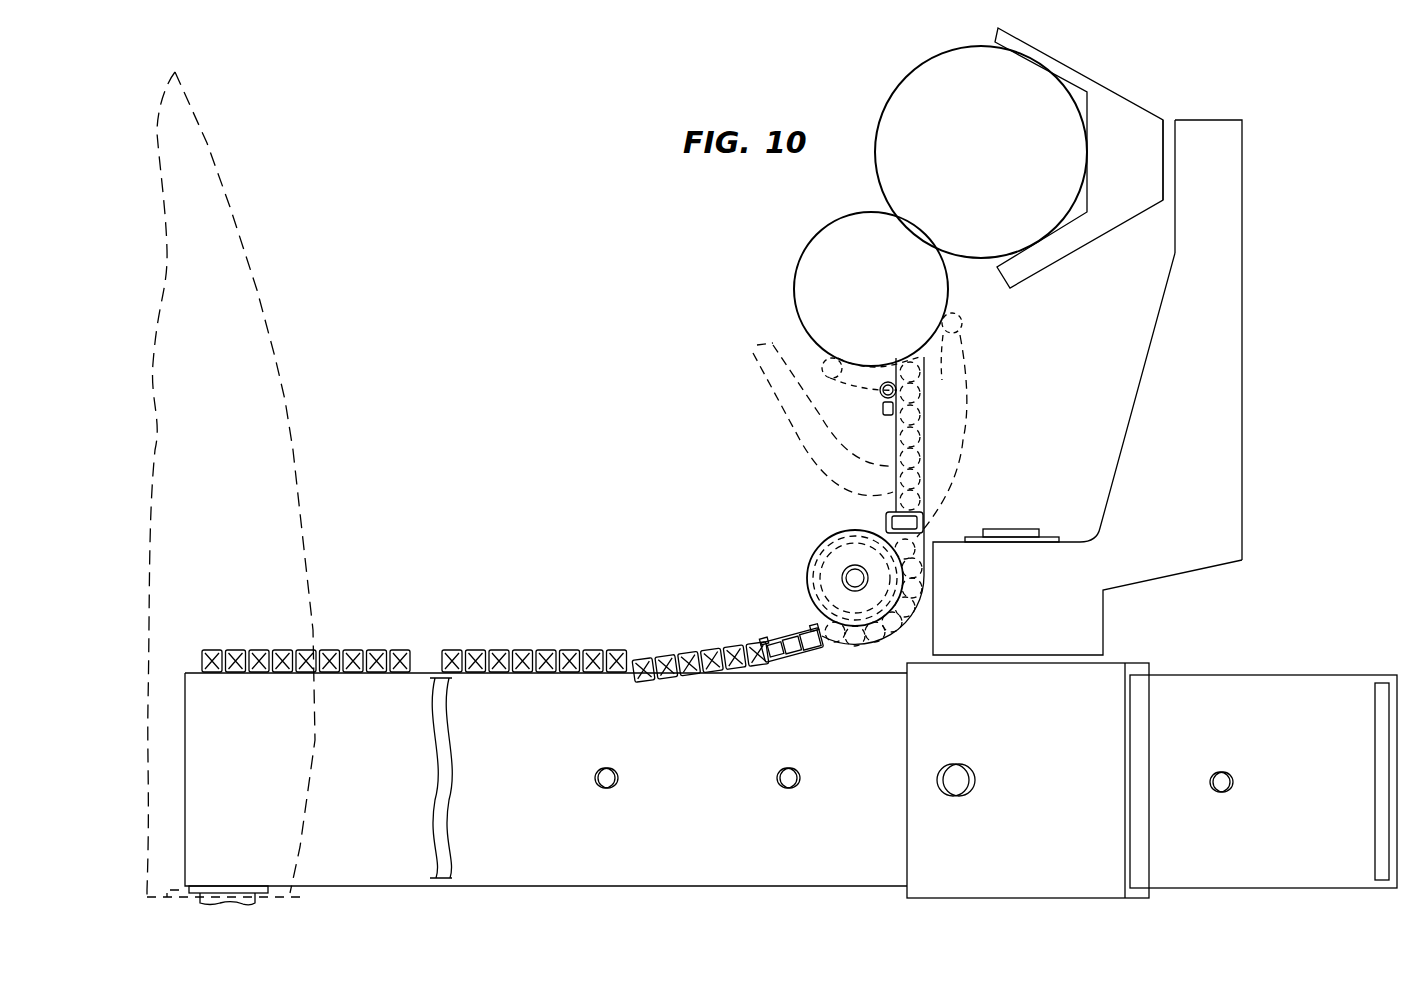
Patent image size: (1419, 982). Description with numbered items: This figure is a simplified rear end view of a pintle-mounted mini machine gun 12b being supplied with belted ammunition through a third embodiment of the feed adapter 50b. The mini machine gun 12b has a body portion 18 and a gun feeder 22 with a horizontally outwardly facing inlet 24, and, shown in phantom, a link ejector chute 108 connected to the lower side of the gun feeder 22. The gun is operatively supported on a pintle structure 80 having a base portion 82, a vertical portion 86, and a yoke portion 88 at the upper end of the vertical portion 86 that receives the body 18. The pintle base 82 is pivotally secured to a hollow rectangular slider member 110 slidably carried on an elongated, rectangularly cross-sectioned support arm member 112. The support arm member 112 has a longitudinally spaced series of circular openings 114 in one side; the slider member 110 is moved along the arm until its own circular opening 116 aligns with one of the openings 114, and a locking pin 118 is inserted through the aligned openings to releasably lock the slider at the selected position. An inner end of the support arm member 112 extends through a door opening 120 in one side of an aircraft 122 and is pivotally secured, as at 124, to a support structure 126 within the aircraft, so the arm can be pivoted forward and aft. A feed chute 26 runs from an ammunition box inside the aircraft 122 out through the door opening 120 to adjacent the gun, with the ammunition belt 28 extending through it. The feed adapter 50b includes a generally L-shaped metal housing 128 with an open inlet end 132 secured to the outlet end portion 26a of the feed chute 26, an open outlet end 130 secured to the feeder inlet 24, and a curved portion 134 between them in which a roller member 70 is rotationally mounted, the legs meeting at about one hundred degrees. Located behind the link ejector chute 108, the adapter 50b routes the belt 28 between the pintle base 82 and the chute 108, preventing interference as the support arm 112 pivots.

The mini machine gun 12b is at (886, 80).
The body portion 18 is at (984, 174).
The gun feeder mechanism 22 is at (884, 306).
The inlet 24 is at (924, 358).
The feed chute 26 is at (544, 650).
The outlet end portion 26a is at (698, 643).
The ammunition belt 28 is at (934, 632).
The feed adapter 50b is at (937, 600).
The roller member 70 is at (812, 556).
The pintle structure 80 is at (1256, 526).
The base portion 82 is at (1103, 638).
The vertical portion 86 is at (1243, 357).
The yoke portion 88 is at (1082, 74).
The link ejector chute 108 is at (975, 470).
The slider member 110 is at (1035, 823).
The support arm member 112 is at (718, 845).
The circular openings 114 is at (618, 776).
The circular opening 116 is at (975, 775).
The locking pin 118 is at (948, 778).
The door opening 120 is at (290, 774).
The aircraft 122 is at (284, 396).
The pivotal securement 124 is at (226, 893).
The support structure 126 is at (300, 880).
The housing 128 is at (874, 654).
The outlet end 130 is at (924, 402).
The inlet end 132 is at (813, 673).
The curved portion 134 is at (908, 640).